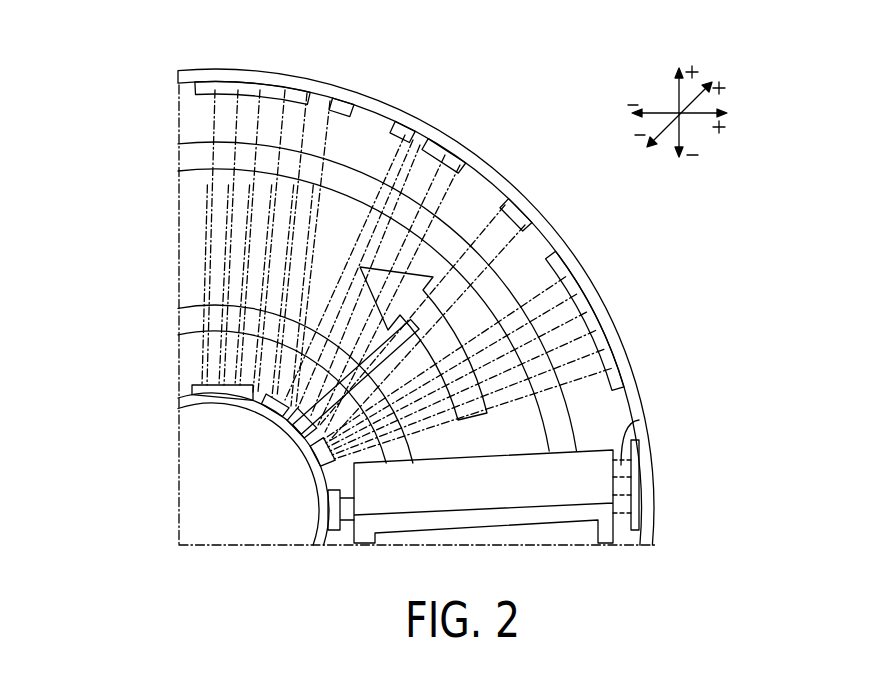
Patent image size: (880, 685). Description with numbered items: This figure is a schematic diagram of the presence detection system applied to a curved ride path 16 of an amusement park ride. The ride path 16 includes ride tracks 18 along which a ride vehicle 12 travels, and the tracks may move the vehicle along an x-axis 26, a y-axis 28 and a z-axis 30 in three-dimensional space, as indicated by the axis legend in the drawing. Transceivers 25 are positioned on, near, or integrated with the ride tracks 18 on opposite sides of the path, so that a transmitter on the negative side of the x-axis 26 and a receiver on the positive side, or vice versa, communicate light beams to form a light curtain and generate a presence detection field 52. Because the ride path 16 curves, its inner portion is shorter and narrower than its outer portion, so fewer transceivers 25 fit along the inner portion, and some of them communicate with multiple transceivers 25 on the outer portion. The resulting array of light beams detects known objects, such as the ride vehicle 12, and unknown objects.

The ride vehicle 12 is at (587, 467).
The ride path 16 is at (161, 37).
The ride tracks 18 is at (199, 160).
The transceivers 25 is at (644, 507).
The x-axis 26 is at (768, 98).
The y-axis 28 is at (669, 172).
The z-axis 30 is at (688, 36).
The presence detection field 52 is at (643, 419).